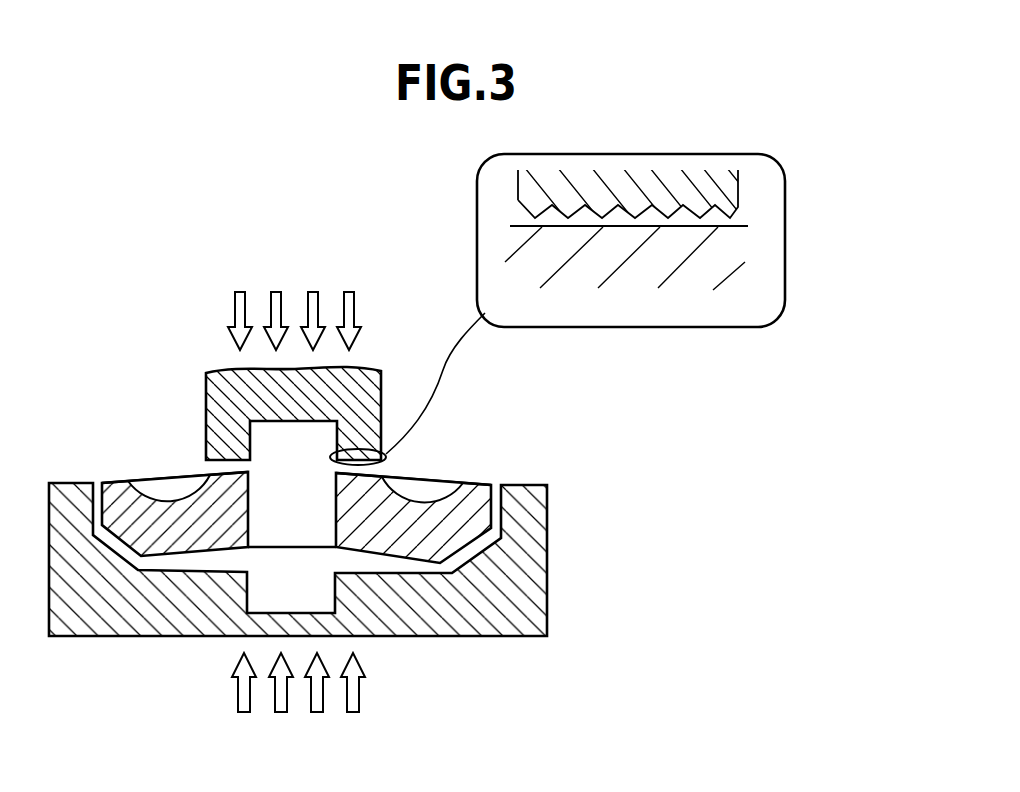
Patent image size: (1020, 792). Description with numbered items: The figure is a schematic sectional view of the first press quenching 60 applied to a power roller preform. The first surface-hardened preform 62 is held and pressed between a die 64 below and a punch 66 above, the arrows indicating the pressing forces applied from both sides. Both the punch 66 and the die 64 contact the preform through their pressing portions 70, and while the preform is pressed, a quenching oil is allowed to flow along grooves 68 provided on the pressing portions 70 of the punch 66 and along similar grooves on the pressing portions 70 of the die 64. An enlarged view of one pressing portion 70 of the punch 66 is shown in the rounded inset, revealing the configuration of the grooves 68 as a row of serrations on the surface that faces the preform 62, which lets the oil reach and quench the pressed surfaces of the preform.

The first press quenching 60 is at (131, 286).
The first surface-hardened preform 62 is at (478, 482).
The die 64 is at (535, 582).
The punch 66 is at (367, 380).
The grooves 68 is at (648, 215).
The pressing portions 70 is at (225, 452).